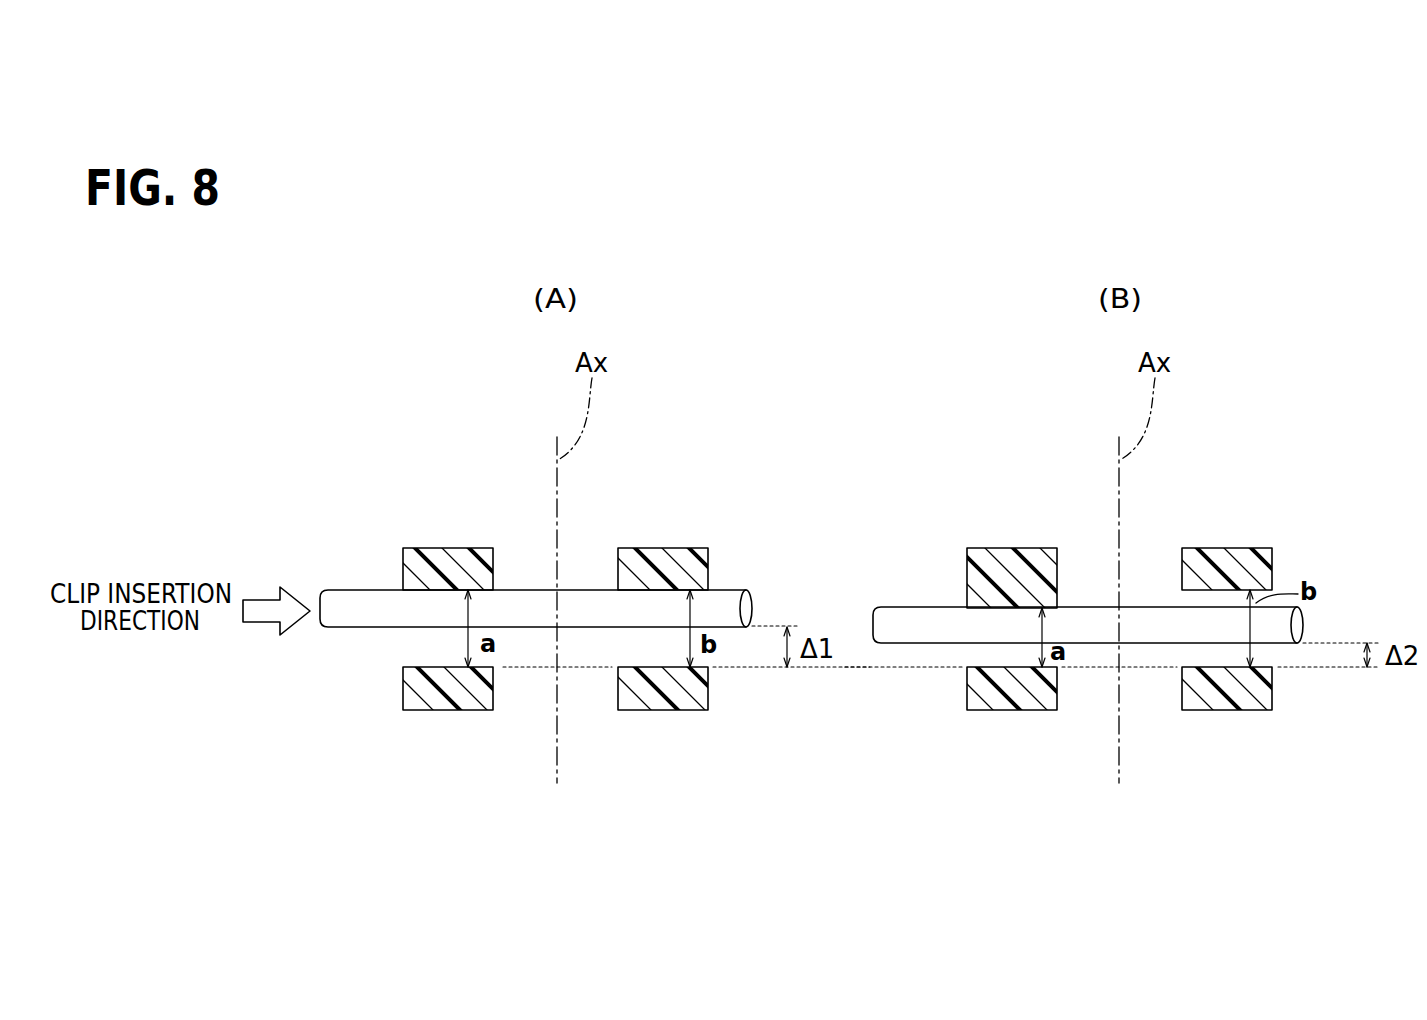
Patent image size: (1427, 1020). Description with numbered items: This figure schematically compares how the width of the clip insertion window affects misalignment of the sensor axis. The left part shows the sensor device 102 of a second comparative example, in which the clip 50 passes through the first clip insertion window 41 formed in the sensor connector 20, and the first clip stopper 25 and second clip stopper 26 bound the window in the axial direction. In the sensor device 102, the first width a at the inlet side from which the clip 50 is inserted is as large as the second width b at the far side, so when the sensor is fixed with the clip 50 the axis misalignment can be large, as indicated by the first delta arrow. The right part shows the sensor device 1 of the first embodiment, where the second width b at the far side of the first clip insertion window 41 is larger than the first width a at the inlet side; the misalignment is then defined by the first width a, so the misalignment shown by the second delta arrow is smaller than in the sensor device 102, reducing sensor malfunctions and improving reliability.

The sensor device of second comparative example 102 is at (336, 441).
The sensor device 1 is at (911, 441).
The clip 50 is at (345, 589).
The first clip stopper 25 is at (440, 547).
The second clip stopper 26 is at (683, 547).
The sensor connector 20 is at (438, 711).
The first clip insertion window 41 is at (427, 650).